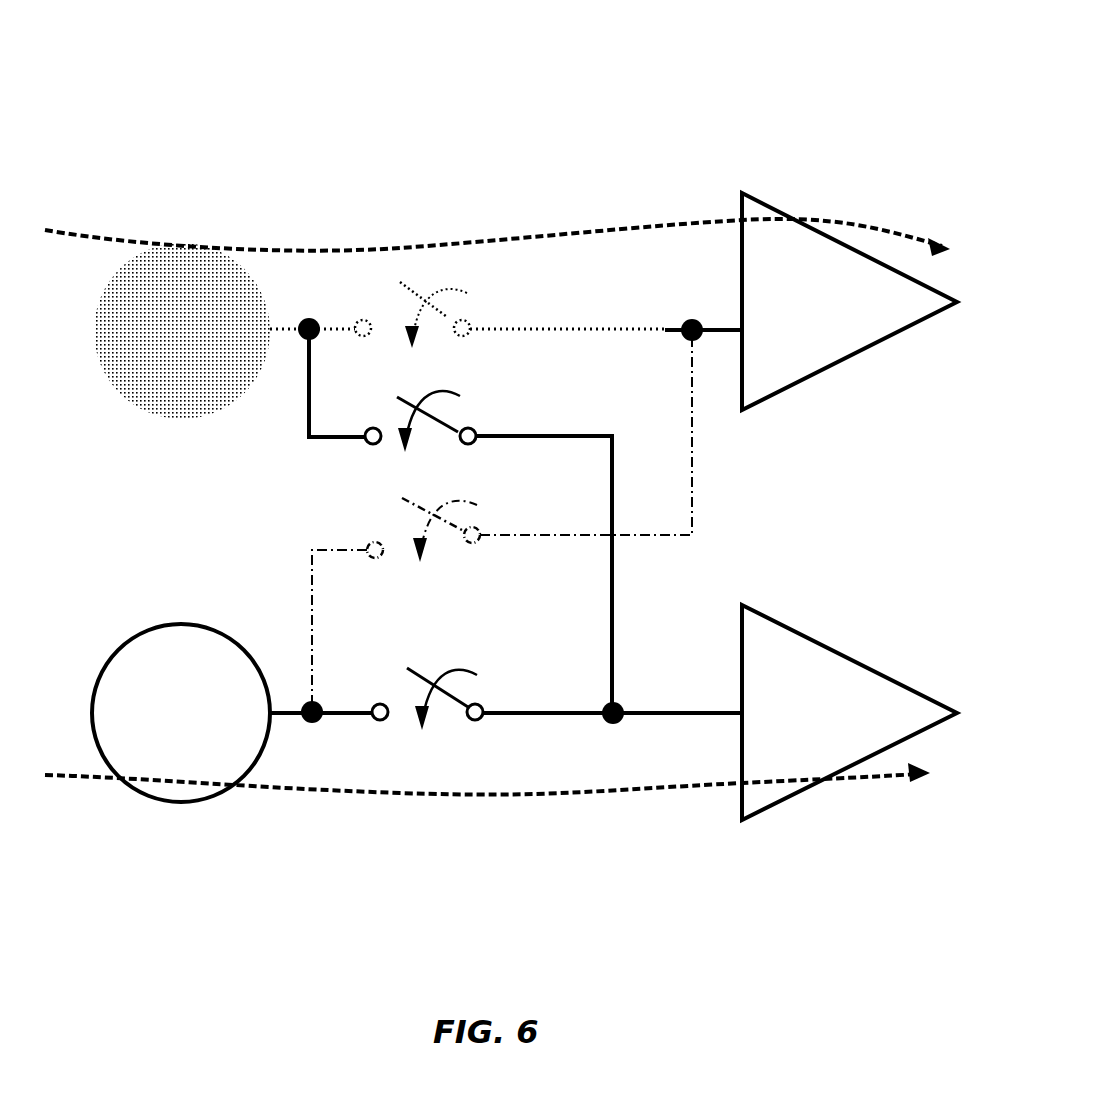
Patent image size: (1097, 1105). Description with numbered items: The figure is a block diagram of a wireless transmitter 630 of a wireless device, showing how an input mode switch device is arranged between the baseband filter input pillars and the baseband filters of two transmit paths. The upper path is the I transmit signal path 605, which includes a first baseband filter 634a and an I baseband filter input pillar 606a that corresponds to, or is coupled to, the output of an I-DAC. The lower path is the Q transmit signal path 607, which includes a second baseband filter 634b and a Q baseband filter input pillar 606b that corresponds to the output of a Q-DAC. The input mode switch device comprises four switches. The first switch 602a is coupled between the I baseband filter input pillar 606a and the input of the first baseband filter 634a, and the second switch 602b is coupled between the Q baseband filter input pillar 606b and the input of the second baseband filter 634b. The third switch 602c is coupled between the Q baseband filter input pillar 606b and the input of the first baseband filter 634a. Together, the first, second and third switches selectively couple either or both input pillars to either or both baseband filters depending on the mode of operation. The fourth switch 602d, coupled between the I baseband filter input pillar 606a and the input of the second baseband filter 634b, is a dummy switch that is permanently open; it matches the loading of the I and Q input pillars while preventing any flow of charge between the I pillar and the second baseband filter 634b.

The wireless transmitter 630 is at (240, 95).
The I transmit signal path 605 is at (647, 225).
The Q transmit signal path 607 is at (562, 793).
The I baseband filter input pillar 606a is at (182, 331).
The Q baseband filter input pillar 606b is at (181, 713).
The first switch 602a is at (412, 330).
The second switch 602b is at (427, 727).
The third switch 602c is at (423, 546).
The fourth switch 602d is at (420, 432).
The first baseband filter 634a is at (849, 301).
The second baseband filter 634b is at (849, 712).